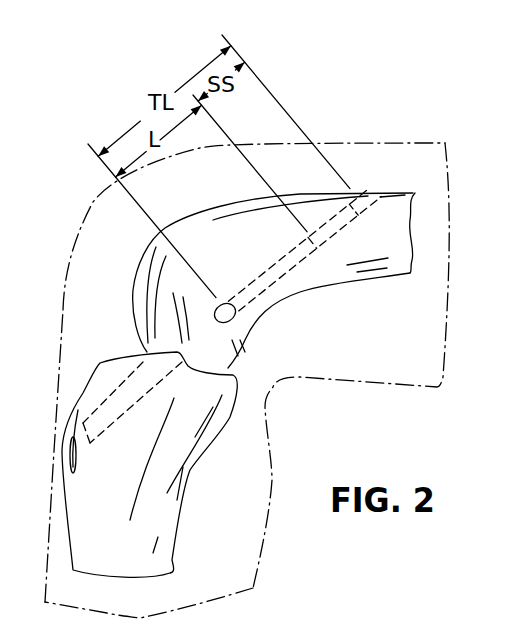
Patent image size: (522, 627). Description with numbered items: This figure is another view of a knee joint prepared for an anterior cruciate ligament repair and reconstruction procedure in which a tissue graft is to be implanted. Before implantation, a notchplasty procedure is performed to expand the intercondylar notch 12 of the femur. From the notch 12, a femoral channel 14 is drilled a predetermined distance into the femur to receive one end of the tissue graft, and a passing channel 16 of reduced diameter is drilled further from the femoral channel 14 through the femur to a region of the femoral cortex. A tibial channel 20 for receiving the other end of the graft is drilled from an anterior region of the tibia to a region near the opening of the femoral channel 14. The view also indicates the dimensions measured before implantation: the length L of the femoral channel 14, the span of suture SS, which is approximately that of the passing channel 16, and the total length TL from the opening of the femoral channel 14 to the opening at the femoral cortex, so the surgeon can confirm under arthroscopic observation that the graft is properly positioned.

The intercondylar notch 12 is at (212, 357).
The femoral channel 14 is at (267, 271).
The passing channel 16 is at (345, 217).
The tibial channel 20 is at (115, 372).